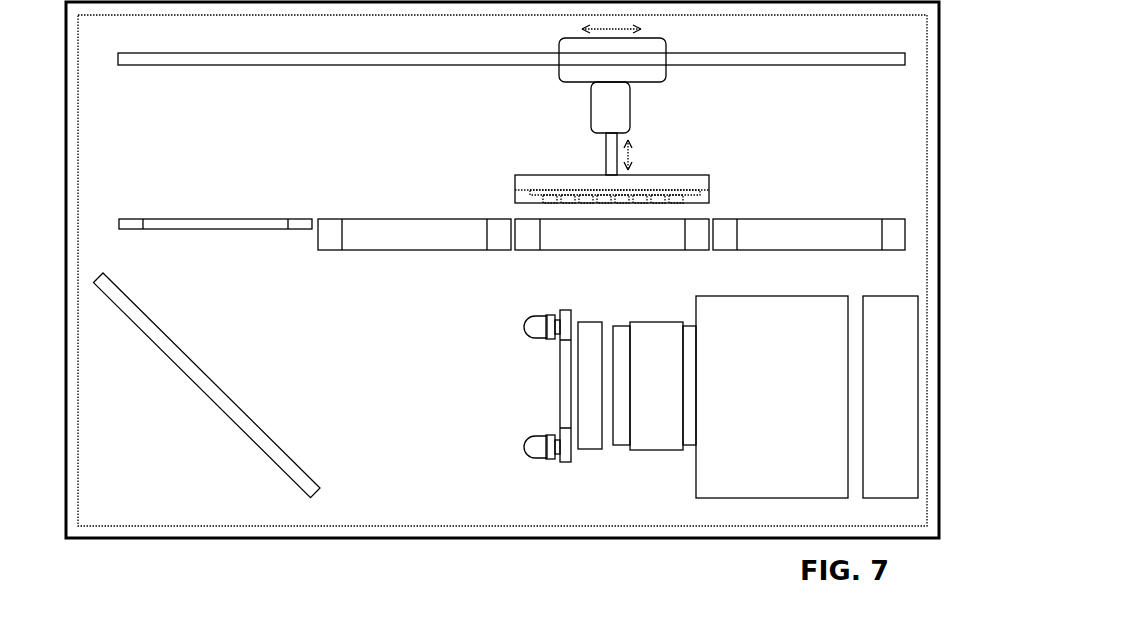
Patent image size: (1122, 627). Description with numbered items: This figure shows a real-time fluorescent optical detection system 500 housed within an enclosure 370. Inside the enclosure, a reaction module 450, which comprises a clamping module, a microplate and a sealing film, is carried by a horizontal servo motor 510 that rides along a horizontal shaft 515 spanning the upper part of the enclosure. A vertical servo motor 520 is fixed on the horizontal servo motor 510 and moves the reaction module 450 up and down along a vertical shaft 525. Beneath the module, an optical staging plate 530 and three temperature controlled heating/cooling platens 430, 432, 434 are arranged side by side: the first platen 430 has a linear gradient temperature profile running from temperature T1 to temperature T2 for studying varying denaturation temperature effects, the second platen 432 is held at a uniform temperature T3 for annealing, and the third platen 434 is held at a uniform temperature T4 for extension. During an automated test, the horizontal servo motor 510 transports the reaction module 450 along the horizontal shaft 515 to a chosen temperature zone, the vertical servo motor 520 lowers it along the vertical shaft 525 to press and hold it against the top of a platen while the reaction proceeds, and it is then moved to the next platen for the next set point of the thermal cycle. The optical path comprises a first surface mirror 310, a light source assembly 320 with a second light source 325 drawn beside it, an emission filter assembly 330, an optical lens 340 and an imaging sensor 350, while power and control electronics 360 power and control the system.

The optical inspection system 500 is at (185, 552).
The enclosure 370 is at (200, 525).
The horizontal shaft 515 is at (236, 66).
The horizontal servo motor 510 is at (557, 77).
The vertical servo motor 520 is at (635, 115).
The vertical shaft 525 is at (605, 155).
The reaction module 450 is at (710, 186).
The optical staging plate 530 is at (202, 219).
The first platen 430 is at (385, 219).
The second platen 432 is at (615, 251).
The third platen 434 is at (780, 219).
The first surface mirror 310 is at (152, 352).
The light source assembly 320 is at (558, 310).
The light source 325 is at (527, 446).
The emission filter assembly 330 is at (590, 450).
The optical lens 340 is at (660, 451).
The imaging sensor 350 is at (718, 296).
The power and control electronics 360 is at (907, 296).